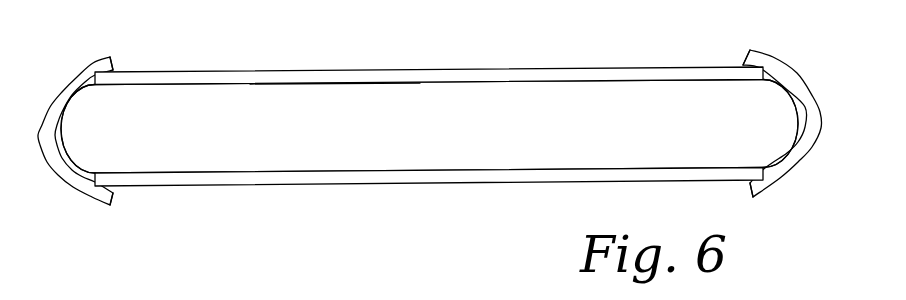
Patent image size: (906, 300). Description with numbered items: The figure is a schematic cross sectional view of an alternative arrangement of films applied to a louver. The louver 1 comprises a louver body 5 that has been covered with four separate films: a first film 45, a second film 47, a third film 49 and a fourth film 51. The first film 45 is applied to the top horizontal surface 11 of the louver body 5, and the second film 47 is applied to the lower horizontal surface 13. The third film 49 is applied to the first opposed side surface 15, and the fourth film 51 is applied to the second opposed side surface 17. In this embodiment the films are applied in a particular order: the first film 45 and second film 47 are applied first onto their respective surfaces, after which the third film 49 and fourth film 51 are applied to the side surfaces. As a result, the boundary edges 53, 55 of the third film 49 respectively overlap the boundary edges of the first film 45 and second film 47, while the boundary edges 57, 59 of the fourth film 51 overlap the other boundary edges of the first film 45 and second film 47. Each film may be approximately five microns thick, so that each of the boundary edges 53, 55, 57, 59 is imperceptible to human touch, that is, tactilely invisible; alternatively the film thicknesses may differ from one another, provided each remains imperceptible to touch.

The louver 1 is at (198, 247).
The louver body 5 is at (526, 144).
The top horizontal surface 11 is at (354, 84).
The lower horizontal surface 13 is at (432, 170).
The first opposed side surface 15 is at (800, 110).
The second opposed side surface 17 is at (62, 138).
The first film 45 is at (497, 71).
The second film 47 is at (400, 176).
The third film 49 is at (809, 84).
The fourth film 51 is at (60, 100).
The boundary edge 53 is at (745, 58).
The boundary edge 55 is at (746, 190).
The boundary edge 57 is at (113, 62).
The boundary edge 59 is at (115, 195).